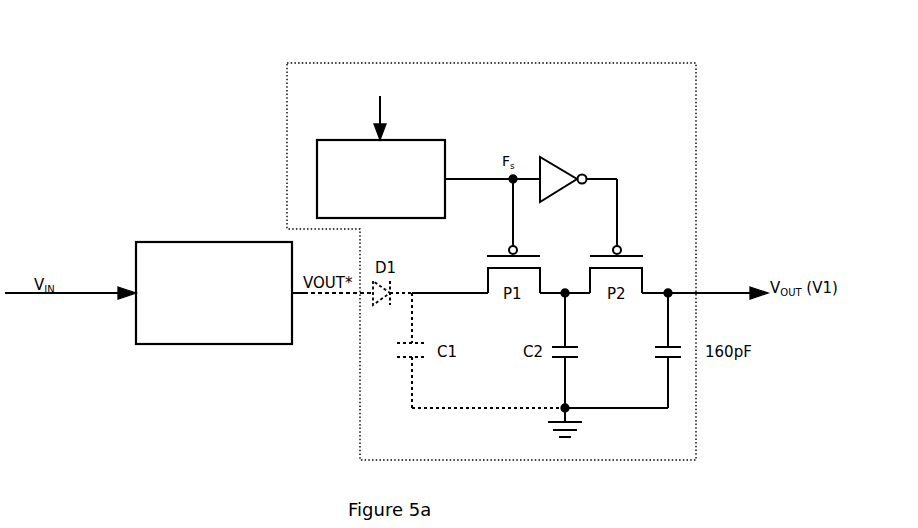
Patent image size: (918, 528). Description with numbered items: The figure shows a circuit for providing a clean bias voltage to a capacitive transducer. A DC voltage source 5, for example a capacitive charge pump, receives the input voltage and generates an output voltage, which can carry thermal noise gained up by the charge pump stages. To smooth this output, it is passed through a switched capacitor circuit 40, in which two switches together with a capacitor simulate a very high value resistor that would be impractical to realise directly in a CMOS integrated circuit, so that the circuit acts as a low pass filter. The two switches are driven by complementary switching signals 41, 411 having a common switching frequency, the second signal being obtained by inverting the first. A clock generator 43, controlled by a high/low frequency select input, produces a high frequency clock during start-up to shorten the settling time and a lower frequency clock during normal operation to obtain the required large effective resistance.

The DC voltage source 5 is at (190, 242).
The switched capacitor circuit 40 is at (697, 80).
The clock generator 43 is at (327, 185).
The switching signal 41 is at (513, 214).
The complementary switching signal 411 is at (617, 212).